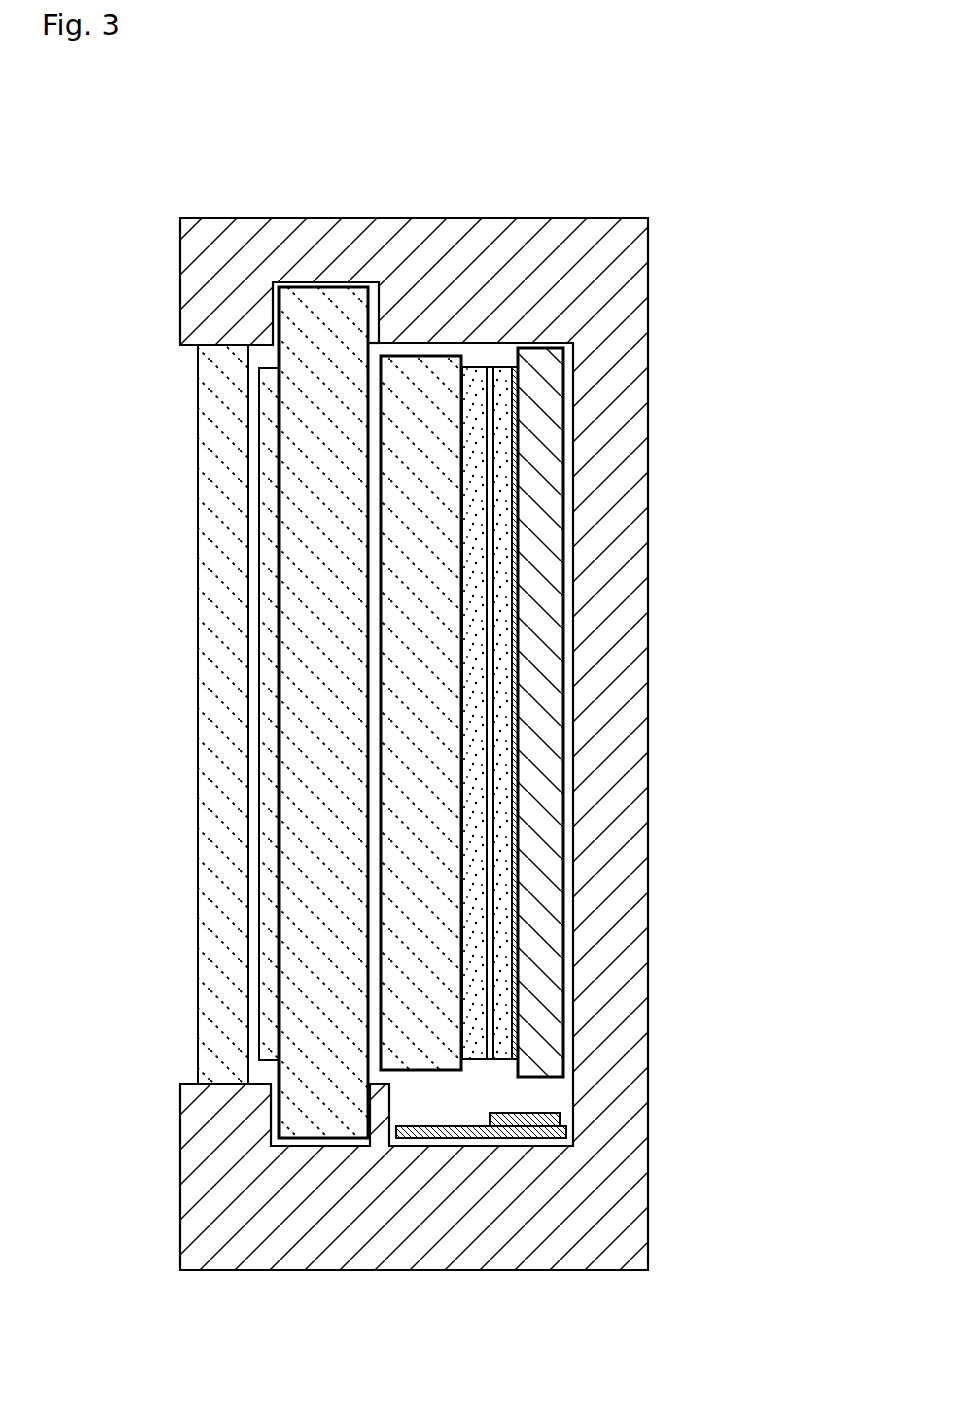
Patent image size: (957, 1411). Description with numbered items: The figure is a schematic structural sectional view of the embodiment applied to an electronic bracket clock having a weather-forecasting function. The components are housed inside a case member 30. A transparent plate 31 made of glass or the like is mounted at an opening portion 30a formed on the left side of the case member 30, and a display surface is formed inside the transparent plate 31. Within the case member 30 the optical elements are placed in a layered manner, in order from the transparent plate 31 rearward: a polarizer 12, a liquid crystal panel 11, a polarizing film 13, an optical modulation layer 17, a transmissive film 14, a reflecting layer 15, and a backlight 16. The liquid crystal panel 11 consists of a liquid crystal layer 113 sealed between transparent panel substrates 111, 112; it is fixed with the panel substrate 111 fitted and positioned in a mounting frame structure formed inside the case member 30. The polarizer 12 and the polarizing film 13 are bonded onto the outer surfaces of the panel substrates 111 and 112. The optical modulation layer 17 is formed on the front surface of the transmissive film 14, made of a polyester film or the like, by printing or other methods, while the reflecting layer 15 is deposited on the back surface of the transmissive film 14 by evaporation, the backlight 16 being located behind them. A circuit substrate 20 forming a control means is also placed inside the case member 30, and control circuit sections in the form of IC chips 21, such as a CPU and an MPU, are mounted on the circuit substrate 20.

The liquid crystal panel 11 is at (463, 125).
The panel substrate 111 is at (314, 286).
The panel substrate 112 is at (427, 355).
The liquid crystal layer 113 is at (373, 362).
The polarizer 12 is at (260, 483).
The polarizing film 13 is at (473, 366).
The transmissive film 14 is at (503, 365).
The reflecting layer 15 is at (520, 512).
The backlight 16 is at (563, 619).
The optical modulation layer 17 is at (492, 763).
The circuit substrate 20 is at (435, 1138).
The electronic component 21 is at (527, 1113).
The case member 30 is at (647, 913).
The opening portion 30a is at (215, 1083).
The transparent plate 31 is at (198, 772).